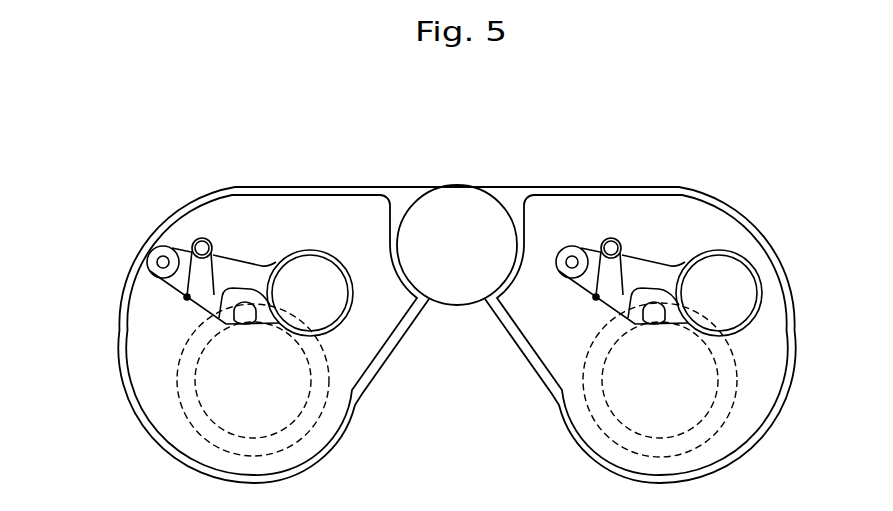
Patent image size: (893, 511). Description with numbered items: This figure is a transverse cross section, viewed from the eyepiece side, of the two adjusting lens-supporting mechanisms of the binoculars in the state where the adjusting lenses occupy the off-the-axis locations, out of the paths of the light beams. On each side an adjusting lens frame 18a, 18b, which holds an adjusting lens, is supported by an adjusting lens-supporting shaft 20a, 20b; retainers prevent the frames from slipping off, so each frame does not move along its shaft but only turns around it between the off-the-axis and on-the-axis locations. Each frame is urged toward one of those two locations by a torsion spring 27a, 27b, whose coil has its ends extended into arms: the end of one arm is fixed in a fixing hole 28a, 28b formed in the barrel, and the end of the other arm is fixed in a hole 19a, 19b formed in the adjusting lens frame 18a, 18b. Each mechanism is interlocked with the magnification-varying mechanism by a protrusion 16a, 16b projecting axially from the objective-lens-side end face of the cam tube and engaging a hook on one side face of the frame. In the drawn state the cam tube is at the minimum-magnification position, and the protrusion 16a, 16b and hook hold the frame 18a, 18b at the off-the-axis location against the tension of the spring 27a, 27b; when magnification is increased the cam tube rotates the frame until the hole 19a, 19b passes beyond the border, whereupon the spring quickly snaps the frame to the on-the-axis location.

The protrusion 16a is at (661, 322).
The protrusion 16b is at (252, 322).
The adjusting lens frame 18a is at (721, 251).
The adjusting lens frame 18b is at (312, 251).
The hole 19a is at (624, 294).
The hole 19b is at (214, 294).
The adjusting lens-supporting shaft 20a is at (573, 259).
The adjusting lens-supporting shaft 20b is at (165, 258).
The torsion spring 27a is at (613, 242).
The torsion spring 27b is at (204, 242).
The fixing hole 28a is at (596, 297).
The fixing hole 28b is at (187, 297).